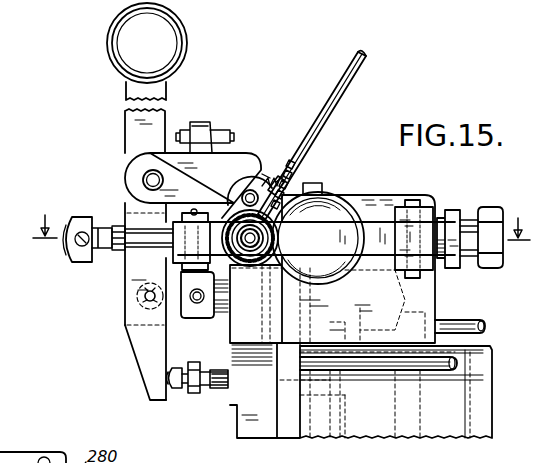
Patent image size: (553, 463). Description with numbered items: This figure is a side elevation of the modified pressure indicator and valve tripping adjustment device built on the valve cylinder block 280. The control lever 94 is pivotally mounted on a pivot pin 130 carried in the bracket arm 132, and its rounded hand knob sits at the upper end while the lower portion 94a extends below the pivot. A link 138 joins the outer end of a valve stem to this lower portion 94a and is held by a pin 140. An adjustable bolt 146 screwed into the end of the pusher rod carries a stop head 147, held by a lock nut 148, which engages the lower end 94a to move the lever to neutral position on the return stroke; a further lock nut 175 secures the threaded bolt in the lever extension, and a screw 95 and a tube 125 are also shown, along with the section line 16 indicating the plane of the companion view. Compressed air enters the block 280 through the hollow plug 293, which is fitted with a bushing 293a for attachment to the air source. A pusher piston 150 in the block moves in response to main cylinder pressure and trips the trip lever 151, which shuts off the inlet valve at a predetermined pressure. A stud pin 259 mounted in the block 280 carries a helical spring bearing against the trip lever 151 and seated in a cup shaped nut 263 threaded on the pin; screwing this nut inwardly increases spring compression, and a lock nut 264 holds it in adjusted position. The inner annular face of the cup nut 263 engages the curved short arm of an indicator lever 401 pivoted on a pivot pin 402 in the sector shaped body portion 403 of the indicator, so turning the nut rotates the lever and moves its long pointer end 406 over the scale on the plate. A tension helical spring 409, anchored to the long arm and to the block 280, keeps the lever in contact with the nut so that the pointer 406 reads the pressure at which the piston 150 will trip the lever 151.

The section line 16 is at (282, 240).
The control lever 94 is at (125, 128).
The lower portion of lever 94a is at (142, 375).
The adjusting screw 95 is at (78, 216).
The tube 125 is at (475, 321).
The pivot pin 130 is at (142, 183).
The bracket arm 132 is at (136, 160).
The link 138 is at (170, 305).
The pin 140 is at (140, 294).
The adjustable bolt 146 is at (202, 367).
The adjustable stop head 147 is at (176, 392).
The lock nut 148 is at (200, 391).
The pusher piston 150 is at (327, 209).
The trip lever 151 is at (372, 222).
The lock nut 175 is at (118, 230).
The stud pin 259 is at (258, 238).
The cup shaped nut 263 is at (254, 264).
The lock nut 264 is at (233, 191).
The valve cylinder block 280 is at (384, 186).
The hollow plug 293 is at (447, 212).
The bushing 293a is at (490, 208).
The indicator lever 401 is at (328, 100).
The pivot pin 402 is at (290, 192).
The body portion 403 is at (343, 93).
The pointer end 406 is at (348, 68).
The tension helical spring 409 is at (274, 176).